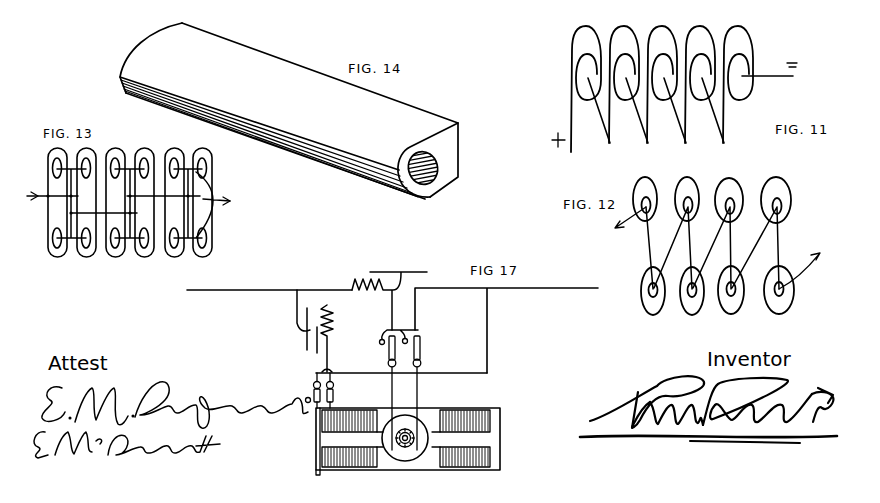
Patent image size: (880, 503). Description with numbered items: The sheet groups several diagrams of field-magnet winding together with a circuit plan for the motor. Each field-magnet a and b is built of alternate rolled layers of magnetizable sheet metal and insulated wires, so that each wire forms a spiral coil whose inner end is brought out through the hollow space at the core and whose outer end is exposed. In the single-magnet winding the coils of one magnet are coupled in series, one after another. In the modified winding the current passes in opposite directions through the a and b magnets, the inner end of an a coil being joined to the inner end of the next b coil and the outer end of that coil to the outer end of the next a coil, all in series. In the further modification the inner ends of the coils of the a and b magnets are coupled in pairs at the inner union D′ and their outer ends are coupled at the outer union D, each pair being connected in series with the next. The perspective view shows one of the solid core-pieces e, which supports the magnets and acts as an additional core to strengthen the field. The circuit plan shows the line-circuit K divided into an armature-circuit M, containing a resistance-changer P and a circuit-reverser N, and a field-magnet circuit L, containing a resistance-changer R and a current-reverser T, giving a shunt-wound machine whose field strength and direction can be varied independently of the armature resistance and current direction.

In FIG. 11, the outer union D is at (662, 89).
In FIG. 12, the outer union D is at (713, 246).
In FIG. 13, the outer union D is at (125, 202).
In FIG. 11, the inner union D′ is at (690, 109).
In FIG. 12, the inner union D′ is at (712, 248).
In FIG. 13, the inner union D′ is at (128, 203).
In FIG. 12, the field-magnet a is at (657, 198).
In FIG. 12, the field-magnet b is at (757, 291).
In FIG. 14, the core-piece e is at (289, 111).
In FIG. 17, the line-circuit K is at (392, 322).
In FIG. 17, the resistance-changer P is at (389, 296).
In FIG. 17, the resistance-changer R is at (321, 331).
In FIG. 17, the field-magnet circuit L is at (407, 365).
In FIG. 17, the current-reverser T is at (315, 390).
In FIG. 17, the armature-circuit M is at (408, 427).
In FIG. 17, the circuit-reverser N is at (400, 390).